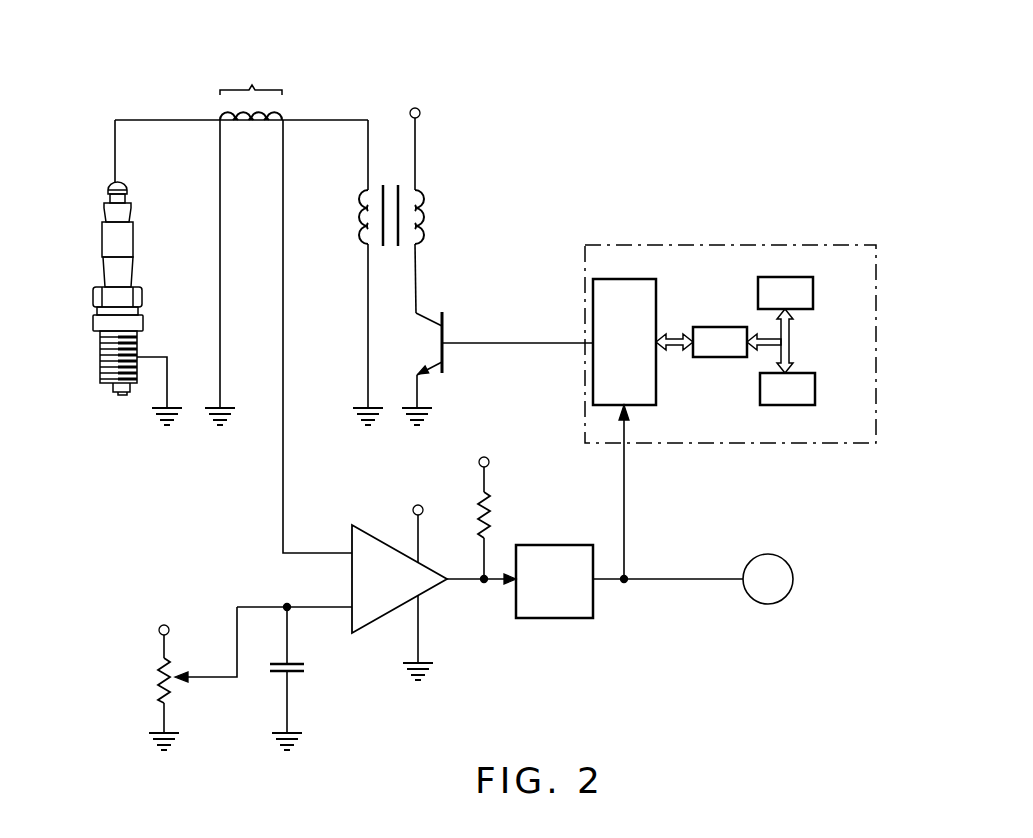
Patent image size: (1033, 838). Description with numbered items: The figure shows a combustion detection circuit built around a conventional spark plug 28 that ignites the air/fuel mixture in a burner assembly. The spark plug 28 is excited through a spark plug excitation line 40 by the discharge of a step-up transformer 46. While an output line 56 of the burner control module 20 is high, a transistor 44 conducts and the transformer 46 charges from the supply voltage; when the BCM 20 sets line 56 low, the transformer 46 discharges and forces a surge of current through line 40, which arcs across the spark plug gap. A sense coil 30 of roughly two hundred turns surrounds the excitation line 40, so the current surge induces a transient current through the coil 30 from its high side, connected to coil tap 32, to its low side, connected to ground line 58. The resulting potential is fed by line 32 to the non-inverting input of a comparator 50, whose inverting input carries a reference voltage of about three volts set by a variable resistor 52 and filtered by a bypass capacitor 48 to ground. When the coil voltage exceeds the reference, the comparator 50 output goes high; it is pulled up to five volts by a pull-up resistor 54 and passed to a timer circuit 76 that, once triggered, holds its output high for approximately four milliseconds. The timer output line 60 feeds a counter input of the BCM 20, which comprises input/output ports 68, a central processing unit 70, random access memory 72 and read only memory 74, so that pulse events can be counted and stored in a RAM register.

The burner control module (BCM) 20 is at (724, 236).
The spark plug 28 is at (103, 360).
The sense coil 30 is at (252, 85).
The coil tap 32 is at (284, 233).
The spark plug excitation line 40 is at (166, 120).
The transistor 44 is at (428, 316).
The step-up transformer 46 is at (425, 212).
The bypass capacitor 48 is at (298, 673).
The comparator 50 is at (381, 558).
The variable resistor 52 is at (158, 688).
The pull-up resistor 54 is at (492, 506).
The output line 56 is at (507, 343).
The ground line 58 is at (220, 238).
The timer output line 60 is at (613, 582).
The input/output ports (I/O) 68 is at (645, 300).
The central processing unit 70 is at (720, 327).
The random access memory 72 is at (787, 277).
The read only memory 74 is at (787, 405).
The timer circuit 76 is at (540, 618).